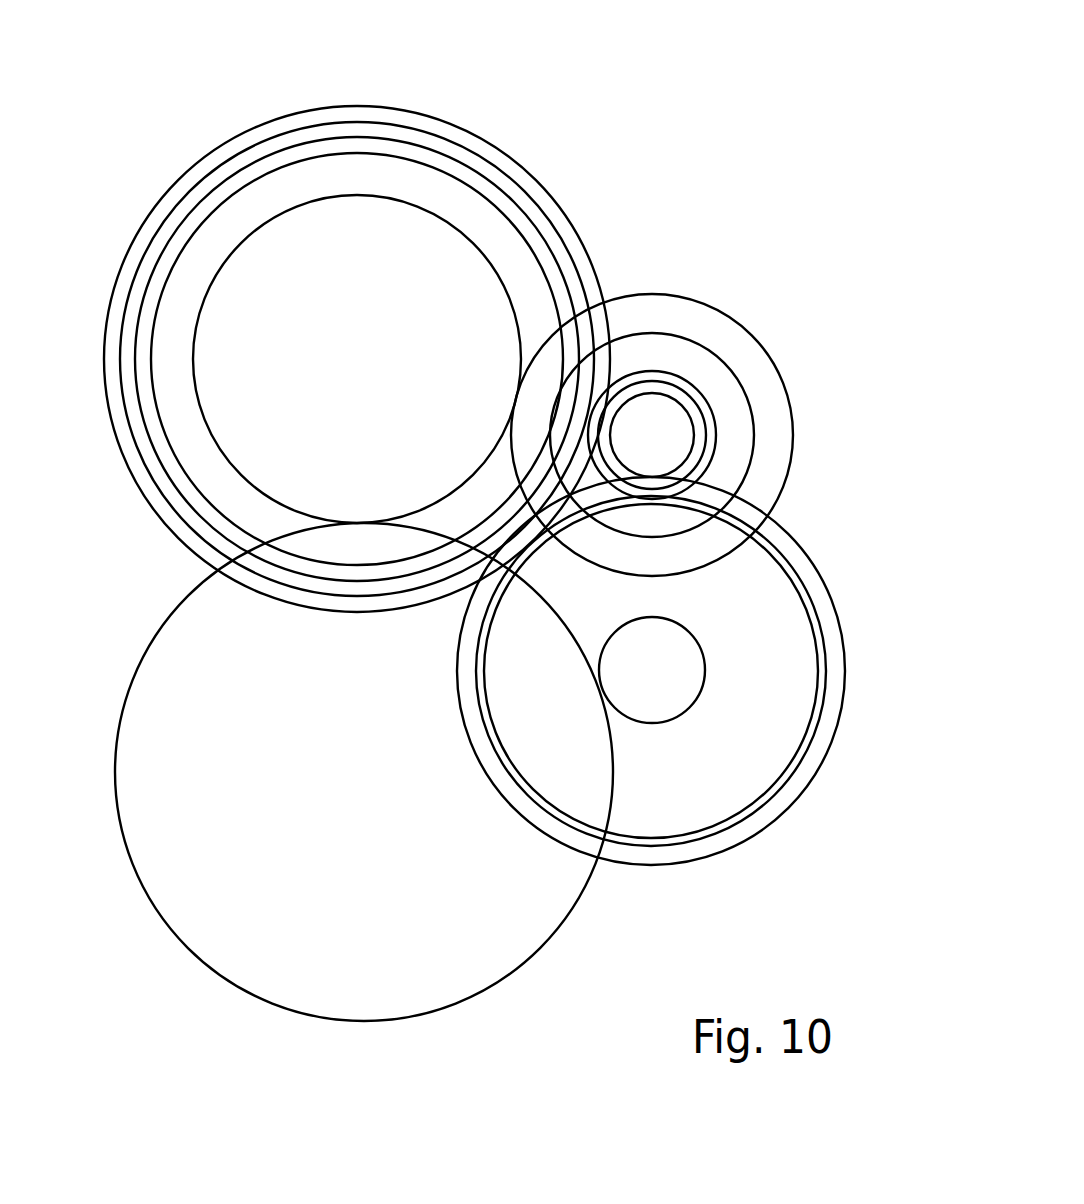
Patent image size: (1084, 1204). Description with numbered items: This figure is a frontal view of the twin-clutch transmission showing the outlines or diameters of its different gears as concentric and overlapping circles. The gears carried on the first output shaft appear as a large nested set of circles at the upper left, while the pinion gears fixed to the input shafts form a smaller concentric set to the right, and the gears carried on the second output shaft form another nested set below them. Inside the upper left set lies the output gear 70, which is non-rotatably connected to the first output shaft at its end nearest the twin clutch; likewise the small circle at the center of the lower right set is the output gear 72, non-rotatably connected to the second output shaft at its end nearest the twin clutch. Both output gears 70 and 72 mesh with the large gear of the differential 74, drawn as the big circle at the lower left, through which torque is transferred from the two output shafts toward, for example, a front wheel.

The output gear 70 is at (203, 417).
The output gear 72 is at (667, 723).
The gear of the differential 74 is at (125, 853).